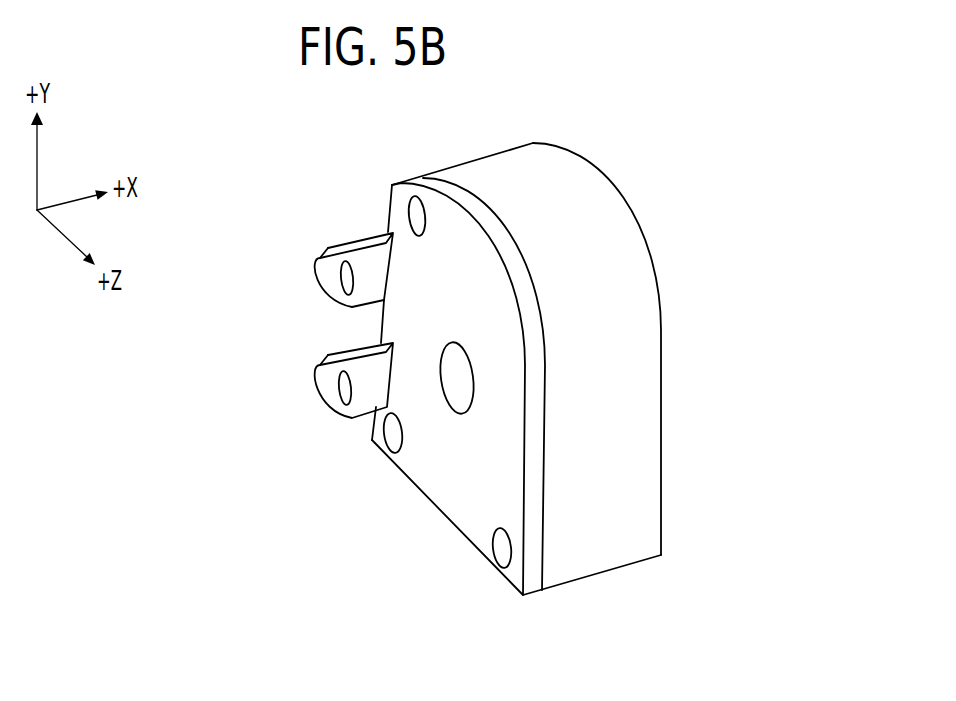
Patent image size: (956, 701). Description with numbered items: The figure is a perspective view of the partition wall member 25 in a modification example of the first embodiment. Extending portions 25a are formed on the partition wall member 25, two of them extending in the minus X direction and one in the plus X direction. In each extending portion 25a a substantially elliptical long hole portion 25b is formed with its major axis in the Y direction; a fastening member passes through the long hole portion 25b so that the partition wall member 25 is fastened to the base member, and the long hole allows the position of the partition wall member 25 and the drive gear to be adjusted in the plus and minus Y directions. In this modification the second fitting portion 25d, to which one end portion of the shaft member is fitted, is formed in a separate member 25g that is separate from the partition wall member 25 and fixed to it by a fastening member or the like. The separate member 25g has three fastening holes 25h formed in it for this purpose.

The partition wall member 25 is at (650, 252).
The extending portion 25a is at (333, 247).
The long hole portion 25b is at (341, 278).
The second fitting portion 25d is at (450, 392).
The separate member 25g is at (448, 467).
The fastening hole 25h is at (493, 548).